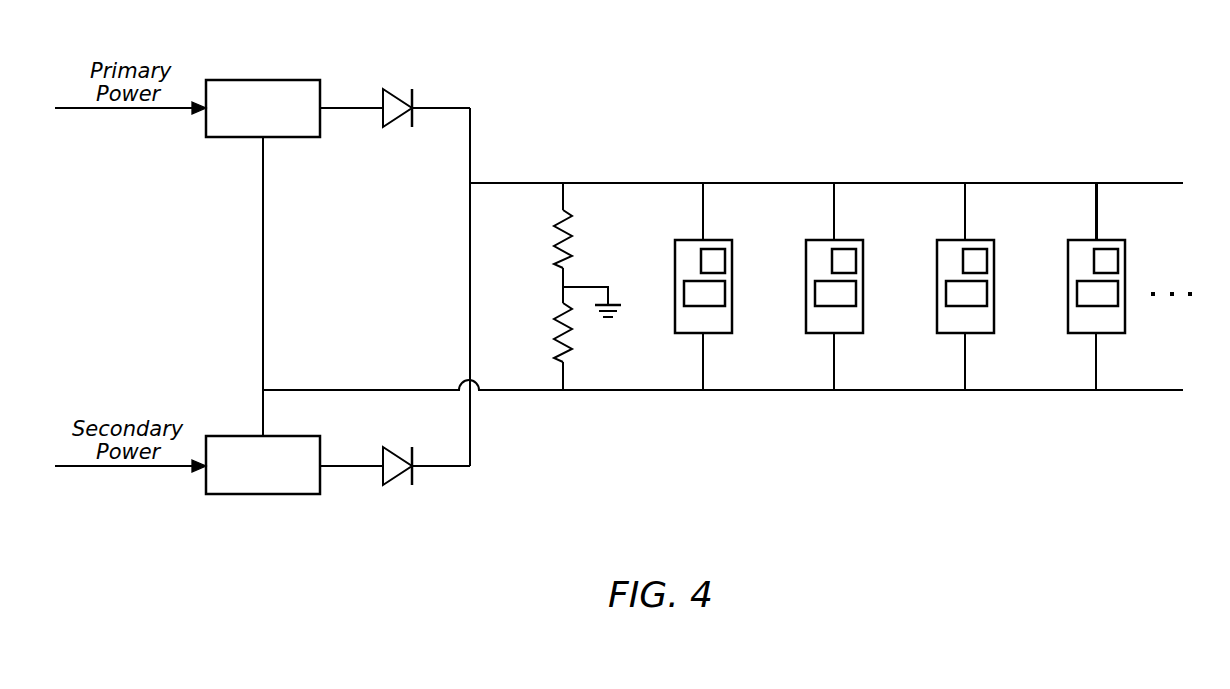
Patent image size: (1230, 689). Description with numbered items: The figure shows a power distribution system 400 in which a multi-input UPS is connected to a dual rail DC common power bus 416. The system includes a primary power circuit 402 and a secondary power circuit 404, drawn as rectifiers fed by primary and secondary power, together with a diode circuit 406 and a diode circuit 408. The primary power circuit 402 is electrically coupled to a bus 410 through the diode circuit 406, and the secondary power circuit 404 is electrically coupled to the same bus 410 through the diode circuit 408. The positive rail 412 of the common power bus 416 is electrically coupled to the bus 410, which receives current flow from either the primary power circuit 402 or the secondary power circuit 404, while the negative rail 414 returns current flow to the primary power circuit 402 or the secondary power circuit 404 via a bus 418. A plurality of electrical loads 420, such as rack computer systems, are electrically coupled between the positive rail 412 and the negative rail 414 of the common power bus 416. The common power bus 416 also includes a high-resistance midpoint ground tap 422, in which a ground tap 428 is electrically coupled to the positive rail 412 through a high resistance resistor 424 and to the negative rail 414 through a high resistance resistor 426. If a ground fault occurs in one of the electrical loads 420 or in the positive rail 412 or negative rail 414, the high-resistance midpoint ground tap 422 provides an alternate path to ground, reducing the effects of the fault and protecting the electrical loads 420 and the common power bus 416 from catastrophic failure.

The power distribution system 400 is at (980, 90).
The primary power circuit 402 is at (262, 80).
The secondary power circuit 404 is at (261, 494).
The diode circuit 406 is at (390, 88).
The diode circuit 408 is at (395, 483).
The bus 410 is at (465, 222).
The positive rail 412 is at (638, 182).
The negative rail 414 is at (640, 392).
The common power bus 416 is at (1110, 166).
The bus 418 is at (268, 261).
The electrical loads 420 is at (725, 336).
The high-resistance midpoint ground tap 422 is at (576, 286).
The high resistance resistor 424 is at (553, 222).
The high resistance resistor 426 is at (553, 320).
The ground tap 428 is at (611, 323).